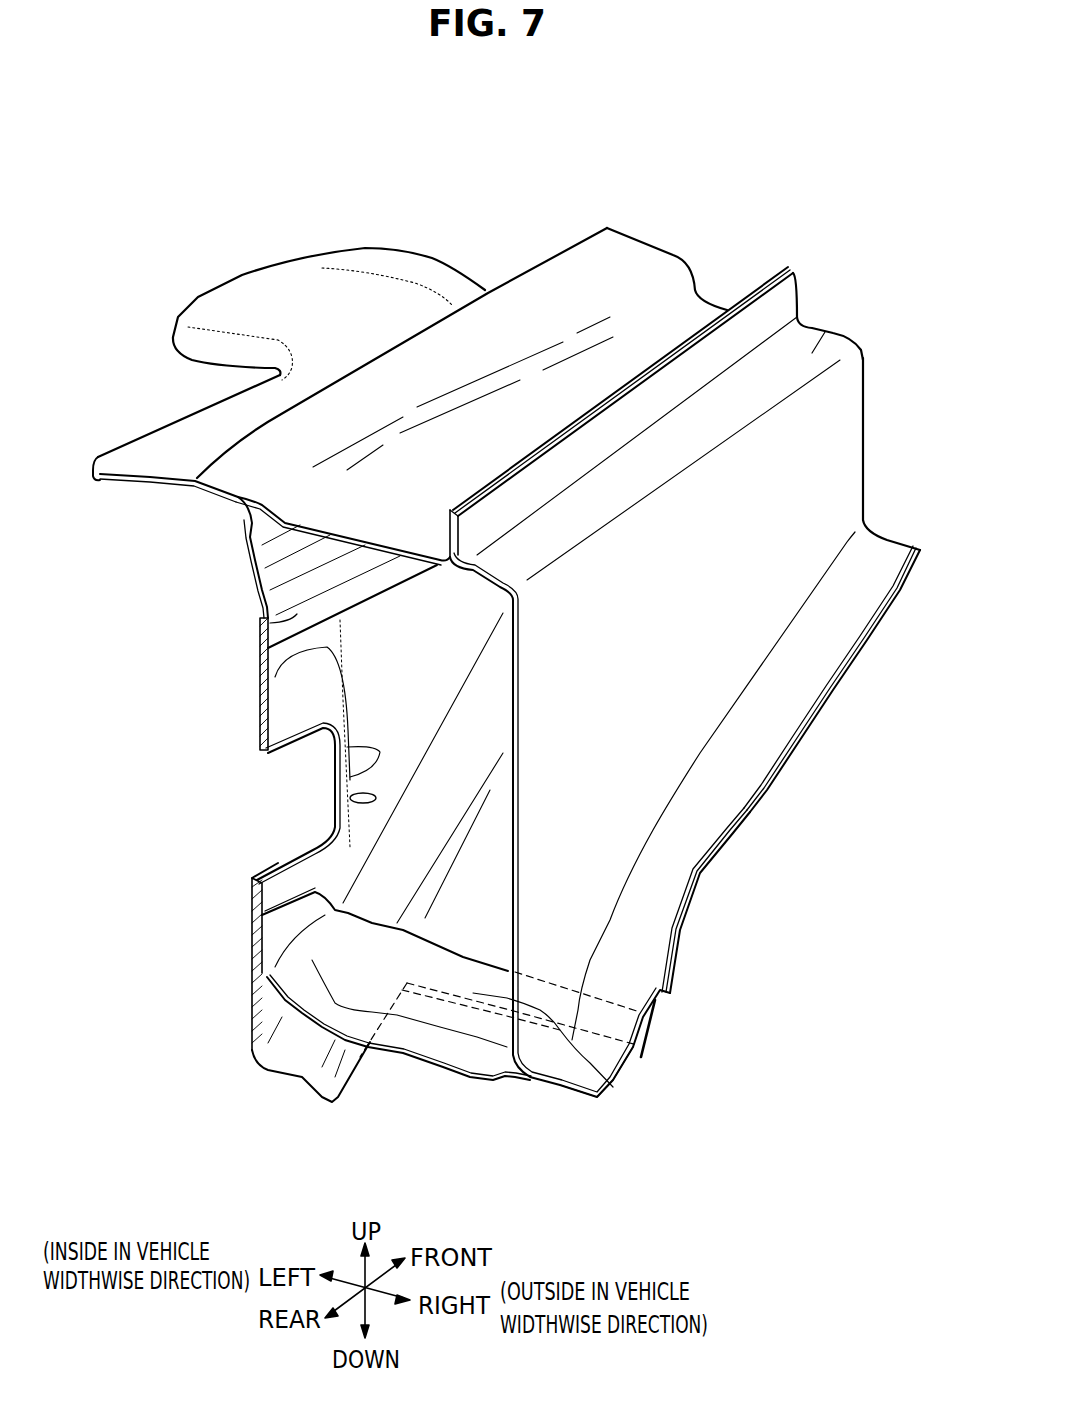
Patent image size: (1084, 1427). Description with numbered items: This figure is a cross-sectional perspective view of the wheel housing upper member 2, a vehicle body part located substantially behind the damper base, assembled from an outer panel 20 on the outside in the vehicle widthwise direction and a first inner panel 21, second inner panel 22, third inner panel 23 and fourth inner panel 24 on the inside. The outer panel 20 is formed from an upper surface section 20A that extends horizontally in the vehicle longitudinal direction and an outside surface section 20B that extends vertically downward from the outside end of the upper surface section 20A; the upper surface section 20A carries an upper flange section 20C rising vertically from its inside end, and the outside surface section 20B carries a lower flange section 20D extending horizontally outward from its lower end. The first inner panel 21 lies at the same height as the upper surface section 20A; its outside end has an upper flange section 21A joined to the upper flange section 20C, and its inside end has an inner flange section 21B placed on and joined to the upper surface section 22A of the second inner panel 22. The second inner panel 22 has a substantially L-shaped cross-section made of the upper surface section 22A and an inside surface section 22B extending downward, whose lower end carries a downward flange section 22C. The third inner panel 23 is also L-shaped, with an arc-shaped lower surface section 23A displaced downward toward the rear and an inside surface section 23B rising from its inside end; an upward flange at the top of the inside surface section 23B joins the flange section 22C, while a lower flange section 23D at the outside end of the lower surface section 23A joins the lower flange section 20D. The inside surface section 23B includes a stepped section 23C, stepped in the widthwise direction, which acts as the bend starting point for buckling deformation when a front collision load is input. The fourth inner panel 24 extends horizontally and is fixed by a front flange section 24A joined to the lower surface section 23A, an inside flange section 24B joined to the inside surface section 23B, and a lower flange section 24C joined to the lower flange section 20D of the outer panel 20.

The wheel housing upper member 2 is at (782, 817).
The outer panel 20 is at (828, 460).
The upper surface section 20A is at (822, 332).
The outside surface section 20B is at (815, 520).
The upper flange section 20C is at (780, 300).
The lower flange section 20D is at (820, 627).
The first inner panel 21 is at (688, 313).
The upper flange section 21A is at (787, 267).
The inner flange section 21B is at (545, 283).
The second inner panel 22 is at (143, 448).
The upper surface section 22A is at (200, 443).
The inside surface section 22B is at (257, 575).
The flange section 22C is at (260, 627).
The third inner panel 23 is at (477, 902).
The lower surface section 23A is at (483, 853).
The inside surface section 23B is at (350, 795).
The stepped section 23C is at (340, 808).
The lower flange section 23D is at (718, 860).
The fourth inner panel 24 is at (458, 1038).
The front flange section 24A is at (560, 1027).
The inside flange section 24B is at (285, 938).
The lower flange section 24C is at (577, 1097).